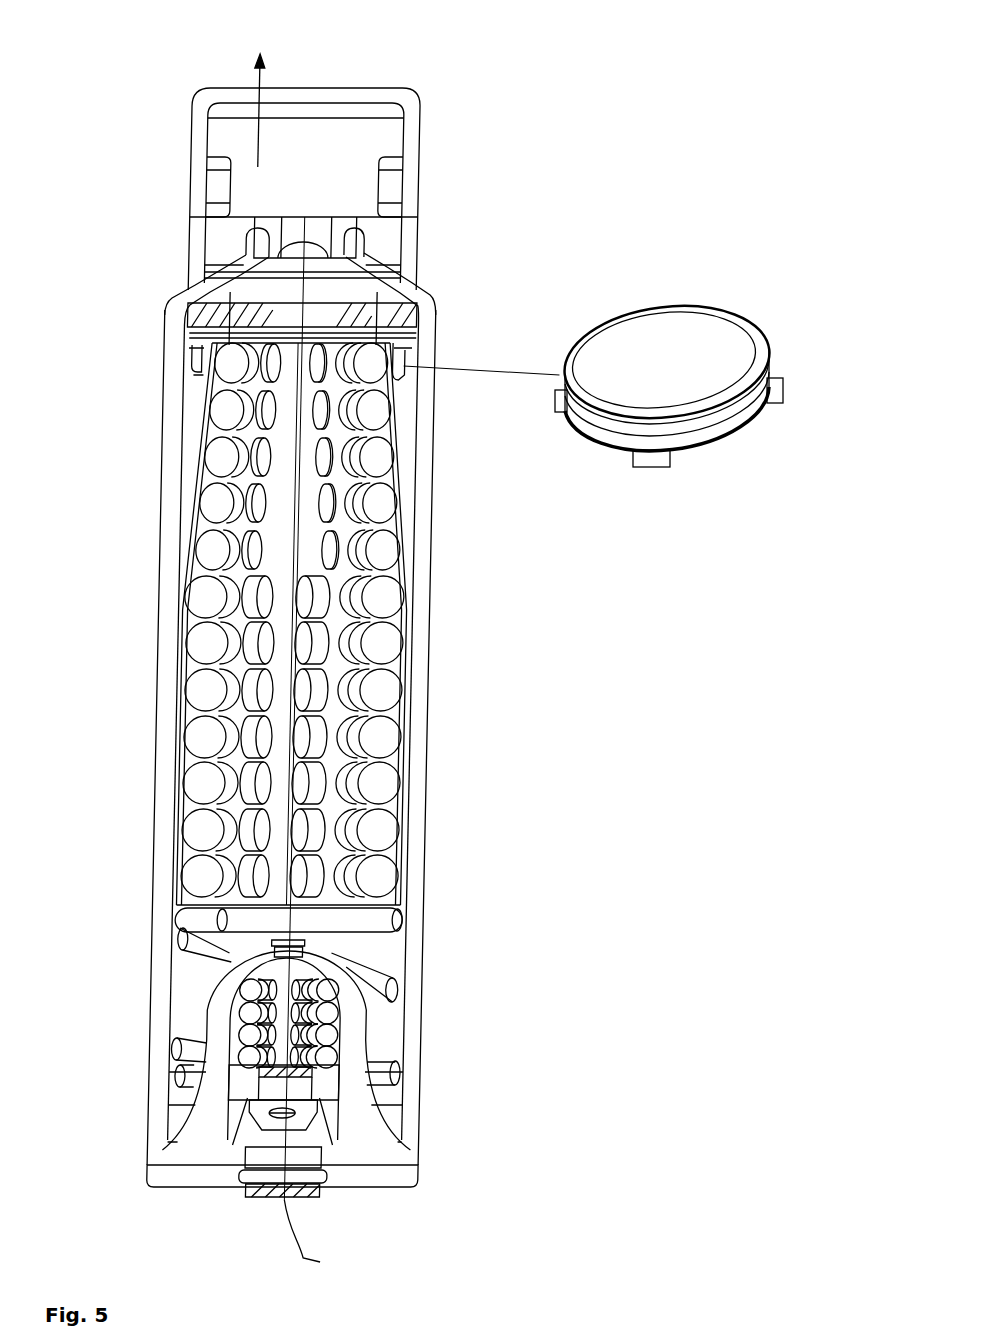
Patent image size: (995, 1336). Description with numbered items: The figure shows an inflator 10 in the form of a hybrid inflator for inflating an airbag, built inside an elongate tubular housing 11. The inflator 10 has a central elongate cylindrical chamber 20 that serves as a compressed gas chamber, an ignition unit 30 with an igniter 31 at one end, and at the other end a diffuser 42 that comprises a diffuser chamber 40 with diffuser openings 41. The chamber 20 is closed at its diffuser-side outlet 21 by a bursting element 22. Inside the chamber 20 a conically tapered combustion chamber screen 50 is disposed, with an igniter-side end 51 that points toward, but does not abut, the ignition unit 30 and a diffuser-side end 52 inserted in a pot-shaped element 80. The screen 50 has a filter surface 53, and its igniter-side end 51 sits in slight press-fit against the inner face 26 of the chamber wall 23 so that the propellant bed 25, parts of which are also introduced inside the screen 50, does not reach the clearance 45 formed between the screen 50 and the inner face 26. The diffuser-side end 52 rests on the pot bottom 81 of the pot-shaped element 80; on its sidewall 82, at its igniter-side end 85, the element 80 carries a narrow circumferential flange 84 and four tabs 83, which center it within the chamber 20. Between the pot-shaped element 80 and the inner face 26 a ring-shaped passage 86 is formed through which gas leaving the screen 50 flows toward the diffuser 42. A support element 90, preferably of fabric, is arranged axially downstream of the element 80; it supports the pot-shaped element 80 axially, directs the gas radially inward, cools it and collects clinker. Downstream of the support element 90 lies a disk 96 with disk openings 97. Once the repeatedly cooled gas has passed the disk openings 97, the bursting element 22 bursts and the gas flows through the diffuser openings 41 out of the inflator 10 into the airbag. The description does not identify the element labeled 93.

The inflator 10 is at (116, 248).
The tubular housing 11 is at (177, 736).
The chamber 20 is at (424, 873).
The diffuser-side outlet 21 is at (415, 263).
The bursting element 22 is at (355, 223).
The chamber wall 23 is at (418, 713).
The propellant bed 25 is at (393, 796).
The inner face 26 is at (189, 824).
The ignition unit 30 is at (417, 1190).
The igniter 31 is at (286, 1087).
The diffuser chamber 40 is at (314, 130).
The diffuser openings 41 is at (203, 188).
The diffuser 42 is at (393, 100).
The clearance 45 is at (410, 458).
The combustion chamber screen 50 is at (388, 535).
The igniter-side end 51 is at (190, 613).
The diffuser-side end 52 is at (198, 348).
The filter surface 53 is at (195, 514).
The pot-shaped element 80 is at (717, 262).
The pot bottom 81 is at (425, 338).
The sidewall 82 is at (767, 370).
The tabs 83 is at (788, 392).
The circumferential flange 84 is at (198, 379).
The igniter-side end 85 is at (404, 400).
The ring-shaped passage 86 is at (201, 369).
The support element 90 is at (205, 322).
The left spring arm 93 is at (195, 262).
The disk 96 is at (243, 310).
The disk openings 97 is at (413, 303).